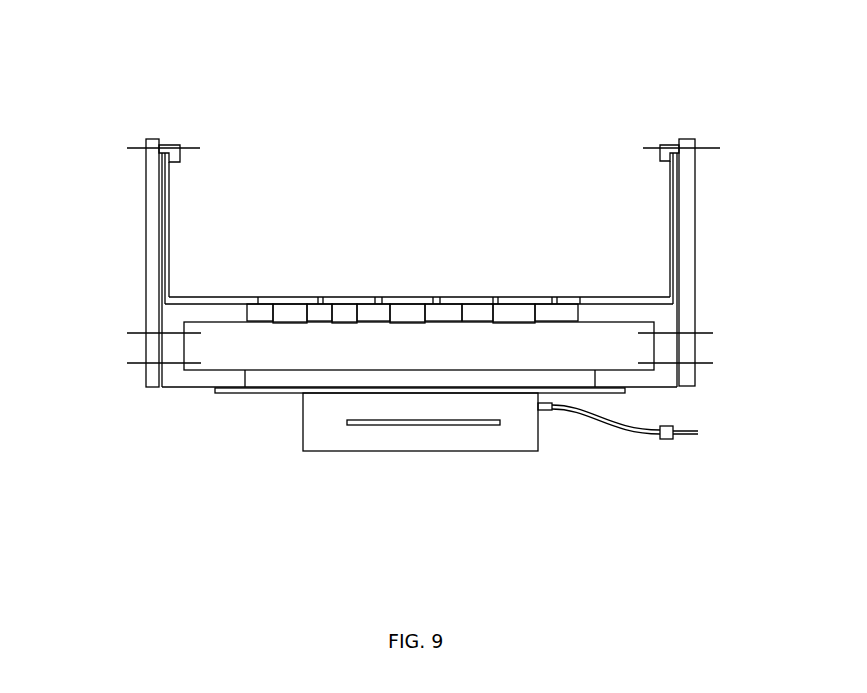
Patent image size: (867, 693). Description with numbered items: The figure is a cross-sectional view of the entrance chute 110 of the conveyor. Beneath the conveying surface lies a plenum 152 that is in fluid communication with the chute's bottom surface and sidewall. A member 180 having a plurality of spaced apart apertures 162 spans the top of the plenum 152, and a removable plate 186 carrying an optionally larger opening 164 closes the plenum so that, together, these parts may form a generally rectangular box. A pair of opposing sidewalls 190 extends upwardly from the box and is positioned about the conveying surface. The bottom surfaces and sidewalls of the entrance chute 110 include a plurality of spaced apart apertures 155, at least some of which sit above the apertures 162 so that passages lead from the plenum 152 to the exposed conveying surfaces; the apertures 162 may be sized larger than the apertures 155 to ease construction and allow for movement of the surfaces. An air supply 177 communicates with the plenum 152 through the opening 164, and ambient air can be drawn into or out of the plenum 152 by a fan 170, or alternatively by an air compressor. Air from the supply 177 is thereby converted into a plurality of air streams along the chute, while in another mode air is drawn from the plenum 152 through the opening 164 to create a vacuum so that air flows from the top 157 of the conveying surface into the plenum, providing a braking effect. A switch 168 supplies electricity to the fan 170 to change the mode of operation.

The entrance chute 110 is at (409, 92).
The opposing sidewalls 190 is at (150, 232).
The member 180 is at (668, 320).
The plenum 152 is at (258, 348).
The opening 164 is at (362, 390).
The removable plate 186 is at (625, 390).
The top of a conveying surface 157 is at (355, 297).
The apertures 162 is at (375, 308).
The apertures 155 is at (318, 303).
The air supply 177 is at (441, 509).
The fan 170 is at (347, 422).
The switch 168 is at (668, 439).